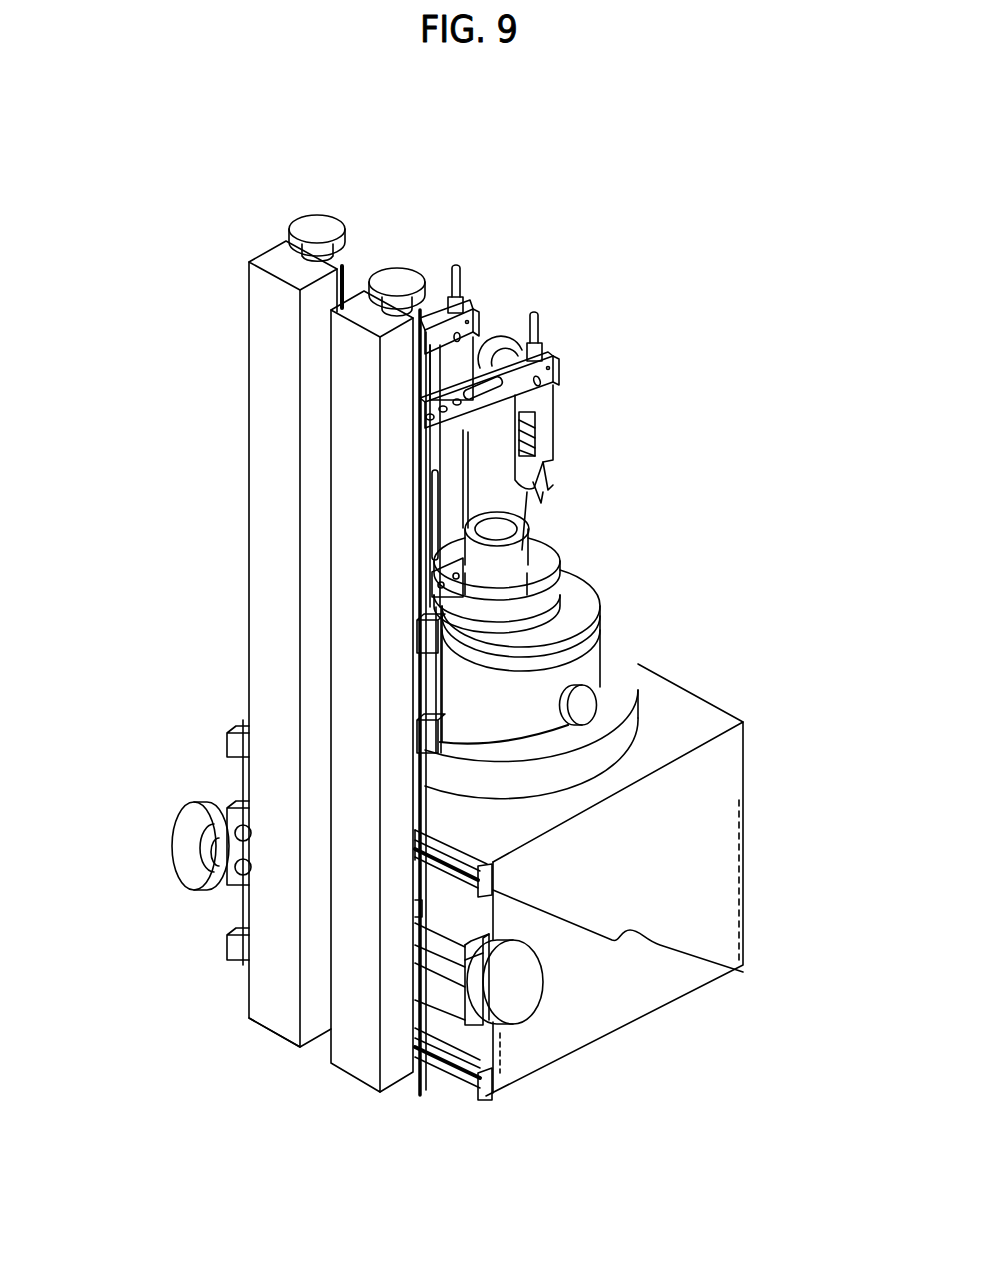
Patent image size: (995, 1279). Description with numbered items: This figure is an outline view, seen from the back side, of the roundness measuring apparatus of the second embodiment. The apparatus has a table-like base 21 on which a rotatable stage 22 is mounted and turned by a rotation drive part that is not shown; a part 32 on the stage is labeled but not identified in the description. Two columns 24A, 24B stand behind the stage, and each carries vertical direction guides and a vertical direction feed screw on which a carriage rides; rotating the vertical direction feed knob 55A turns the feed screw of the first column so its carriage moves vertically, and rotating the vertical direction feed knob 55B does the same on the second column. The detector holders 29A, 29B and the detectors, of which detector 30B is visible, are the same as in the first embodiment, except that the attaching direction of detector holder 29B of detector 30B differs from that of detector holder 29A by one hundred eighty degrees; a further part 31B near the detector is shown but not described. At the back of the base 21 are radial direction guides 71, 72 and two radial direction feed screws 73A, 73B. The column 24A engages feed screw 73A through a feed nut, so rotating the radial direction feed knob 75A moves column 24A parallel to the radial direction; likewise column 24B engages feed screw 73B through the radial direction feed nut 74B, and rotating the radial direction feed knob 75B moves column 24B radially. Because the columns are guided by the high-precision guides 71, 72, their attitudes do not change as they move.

The base 21 is at (743, 770).
The rotatable stage 22 is at (600, 599).
The column 24A is at (270, 342).
The column 24B is at (363, 380).
The detector holder 29A is at (485, 322).
The detector holder 29B is at (559, 363).
The detector 30B is at (555, 415).
The needle 31B is at (538, 520).
The sample holder 32 is at (548, 545).
The vertical direction feed knob 55A is at (310, 223).
The vertical direction feed knob 55B is at (393, 265).
The radial direction guide 71 is at (636, 943).
The radial direction guide 72 is at (483, 1097).
The radial direction feed screw 73A is at (450, 983).
The radial direction feed screw 73B is at (455, 955).
The radial direction feed nut 74B is at (418, 913).
The radial direction feed knob 75A is at (198, 822).
The radial direction feed knob 75B is at (520, 997).